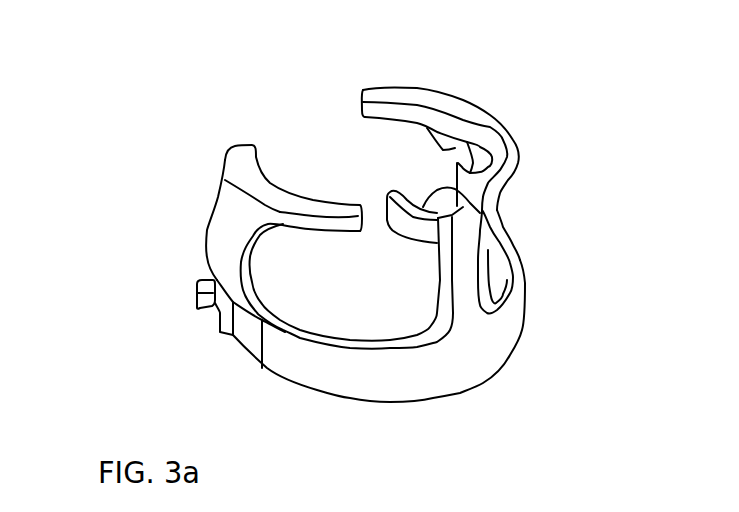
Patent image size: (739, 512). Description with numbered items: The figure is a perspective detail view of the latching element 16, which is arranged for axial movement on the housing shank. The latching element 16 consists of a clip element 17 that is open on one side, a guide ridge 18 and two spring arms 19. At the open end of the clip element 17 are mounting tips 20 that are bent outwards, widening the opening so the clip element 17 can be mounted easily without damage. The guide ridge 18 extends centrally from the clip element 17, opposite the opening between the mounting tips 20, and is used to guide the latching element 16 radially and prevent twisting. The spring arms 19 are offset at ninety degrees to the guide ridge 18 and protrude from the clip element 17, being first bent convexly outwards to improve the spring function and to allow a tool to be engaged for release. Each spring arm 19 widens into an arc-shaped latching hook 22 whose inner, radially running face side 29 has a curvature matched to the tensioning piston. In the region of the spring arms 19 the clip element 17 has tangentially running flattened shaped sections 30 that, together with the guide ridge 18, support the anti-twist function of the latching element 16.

The latching element 16 is at (303, 123).
The clip element 17 is at (440, 372).
The guide ridge 18 is at (465, 270).
The spring arm 19 is at (222, 213).
The mounting tip 20 is at (197, 295).
The latching hook 22 is at (240, 161).
The face side 29 is at (467, 147).
The shaped section 30 is at (250, 338).